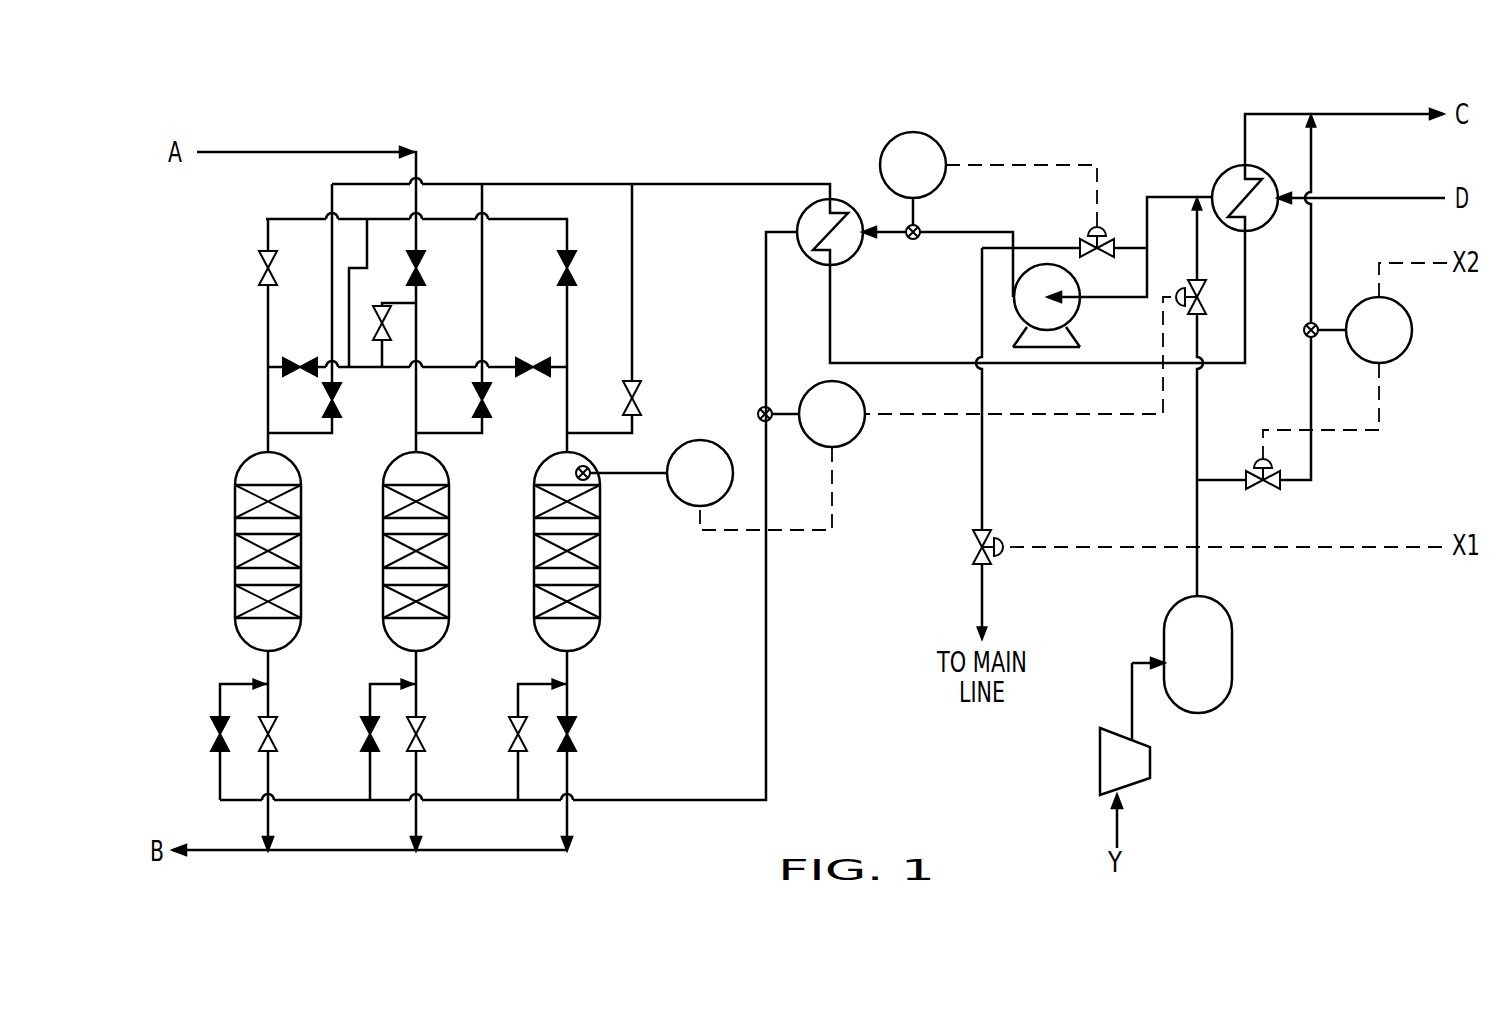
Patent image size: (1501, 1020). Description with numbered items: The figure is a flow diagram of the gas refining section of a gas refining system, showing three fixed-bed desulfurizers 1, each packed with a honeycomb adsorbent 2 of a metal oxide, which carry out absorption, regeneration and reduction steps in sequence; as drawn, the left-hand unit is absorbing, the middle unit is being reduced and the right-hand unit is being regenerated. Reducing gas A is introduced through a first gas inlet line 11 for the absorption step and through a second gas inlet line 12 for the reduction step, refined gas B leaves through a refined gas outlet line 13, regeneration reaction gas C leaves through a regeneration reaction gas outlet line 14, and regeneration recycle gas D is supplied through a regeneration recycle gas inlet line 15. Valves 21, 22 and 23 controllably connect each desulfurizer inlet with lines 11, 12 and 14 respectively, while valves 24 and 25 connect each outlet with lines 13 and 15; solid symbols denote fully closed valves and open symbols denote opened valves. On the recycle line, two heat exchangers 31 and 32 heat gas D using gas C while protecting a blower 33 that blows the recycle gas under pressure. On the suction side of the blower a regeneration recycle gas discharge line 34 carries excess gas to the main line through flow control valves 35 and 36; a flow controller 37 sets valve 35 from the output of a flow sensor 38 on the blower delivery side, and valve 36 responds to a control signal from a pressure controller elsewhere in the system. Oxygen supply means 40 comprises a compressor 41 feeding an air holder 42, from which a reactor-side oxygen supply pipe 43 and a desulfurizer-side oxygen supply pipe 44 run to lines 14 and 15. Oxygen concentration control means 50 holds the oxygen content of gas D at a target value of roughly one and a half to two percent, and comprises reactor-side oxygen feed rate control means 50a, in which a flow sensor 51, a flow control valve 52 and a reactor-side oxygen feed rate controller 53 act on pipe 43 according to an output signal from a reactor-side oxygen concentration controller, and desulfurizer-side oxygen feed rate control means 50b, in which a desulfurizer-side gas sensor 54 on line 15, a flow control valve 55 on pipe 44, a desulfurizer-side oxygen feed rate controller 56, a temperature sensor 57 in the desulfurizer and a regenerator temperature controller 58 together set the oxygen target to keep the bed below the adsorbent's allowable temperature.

The desulfurizer 1 is at (391, 551).
The honeycomb adsorbent 2 is at (240, 503).
The first gas inlet line 11 is at (298, 217).
The second gas inlet line 12 is at (362, 238).
The refined gas outlet line 13 is at (457, 852).
The regeneration reaction gas outlet line 14 is at (717, 182).
The regeneration recycle gas inlet line 15 is at (768, 745).
The valve 21 is at (258, 268).
The valve 22 is at (292, 362).
The valve 23 is at (342, 414).
The valve 24 is at (278, 727).
The valve 25 is at (213, 728).
The heat exchanger 31 is at (847, 196).
The heat exchanger 32 is at (1220, 173).
The blower 33 is at (1048, 264).
The regeneration recycle gas discharge line 34 is at (978, 332).
The flow control valve 35 is at (1100, 224).
The flow control valve 36 is at (973, 549).
The flow controller 37 is at (913, 128).
The flow sensor 38 is at (914, 241).
The oxygen supply means 40 is at (1252, 750).
The compressor 41 is at (1133, 786).
The air holder 42 is at (1233, 658).
The reactor-side oxygen supply pipe 43 is at (1315, 456).
The desulfurizer-side oxygen supply pipe 44 is at (1195, 440).
The oxygen concentration control means 50 is at (1349, 577).
The reactor-side oxygen feed rate control means 50a is at (1421, 446).
The desulfurizer-side oxygen feed rate control means 50b is at (841, 558).
The flow sensor 51 is at (1305, 322).
The flow control valve 52 is at (1268, 490).
The reactor-side oxygen feed rate controller 53 is at (1413, 328).
The desulfurizer-side gas sensor 54 is at (773, 408).
The flow control valve 55 is at (1205, 302).
The desulfurizer-side oxygen feed rate controller 56 is at (855, 437).
The temperature sensor 57 is at (575, 470).
The regenerator temperature controller 58 is at (698, 440).